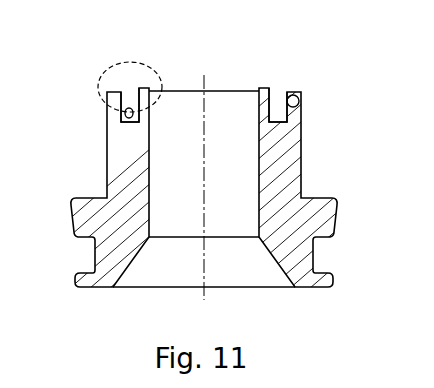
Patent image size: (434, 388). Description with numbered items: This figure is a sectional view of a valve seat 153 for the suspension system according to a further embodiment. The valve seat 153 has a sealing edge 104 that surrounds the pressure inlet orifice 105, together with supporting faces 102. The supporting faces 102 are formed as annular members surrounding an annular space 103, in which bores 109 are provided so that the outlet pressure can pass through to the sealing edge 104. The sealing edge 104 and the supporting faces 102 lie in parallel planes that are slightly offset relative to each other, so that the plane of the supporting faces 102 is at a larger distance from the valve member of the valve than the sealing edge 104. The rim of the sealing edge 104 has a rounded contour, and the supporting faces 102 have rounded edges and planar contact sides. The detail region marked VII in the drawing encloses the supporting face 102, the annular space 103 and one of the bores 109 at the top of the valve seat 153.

The supporting faces 102 is at (110, 83).
The annular space 103 is at (280, 99).
The sealing edge 104 is at (267, 92).
The pressure inlet orifice 105 is at (123, 286).
The bores 109 is at (127, 108).
The valve seat 153 is at (123, 170).
The detail view VII is at (140, 63).